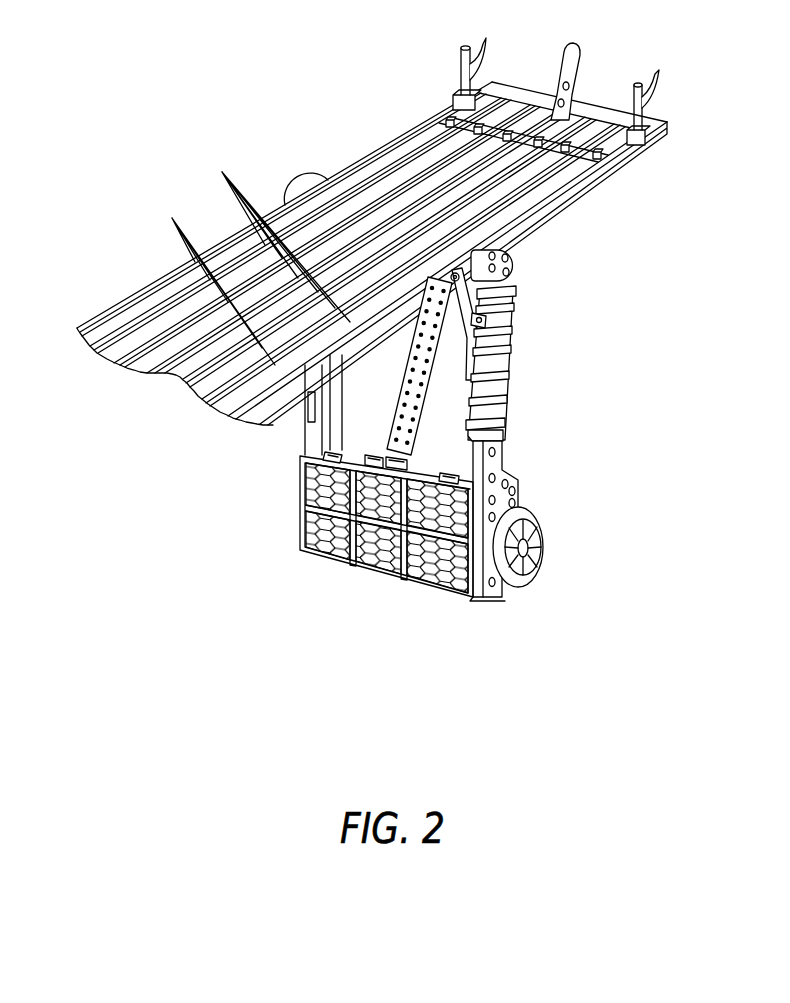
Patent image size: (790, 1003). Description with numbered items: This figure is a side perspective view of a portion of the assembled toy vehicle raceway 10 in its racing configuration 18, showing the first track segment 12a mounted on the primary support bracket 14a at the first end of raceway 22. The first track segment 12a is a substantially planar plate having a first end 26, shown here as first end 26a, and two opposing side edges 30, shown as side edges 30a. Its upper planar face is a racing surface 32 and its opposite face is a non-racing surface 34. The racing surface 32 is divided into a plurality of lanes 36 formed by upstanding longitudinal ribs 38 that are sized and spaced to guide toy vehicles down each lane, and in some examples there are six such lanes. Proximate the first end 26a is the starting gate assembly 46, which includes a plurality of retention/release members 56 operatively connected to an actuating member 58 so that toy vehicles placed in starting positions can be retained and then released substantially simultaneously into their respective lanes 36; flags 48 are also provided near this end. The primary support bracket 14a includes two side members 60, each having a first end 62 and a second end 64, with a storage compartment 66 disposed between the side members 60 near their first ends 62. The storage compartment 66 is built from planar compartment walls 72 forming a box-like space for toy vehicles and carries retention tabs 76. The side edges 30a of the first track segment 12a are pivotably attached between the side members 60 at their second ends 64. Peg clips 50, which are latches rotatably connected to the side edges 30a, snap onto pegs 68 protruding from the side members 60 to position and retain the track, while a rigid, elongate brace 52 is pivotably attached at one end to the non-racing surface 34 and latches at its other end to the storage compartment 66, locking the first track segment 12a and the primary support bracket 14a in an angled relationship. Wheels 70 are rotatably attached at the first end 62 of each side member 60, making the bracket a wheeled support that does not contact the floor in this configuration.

The toy vehicle raceway 10 is at (278, 82).
The racing configuration 18 is at (271, 106).
The first track segment 12a is at (346, 154).
The primary support bracket 14a is at (536, 474).
The first end of raceway 22 is at (626, 50).
The first end 26 is at (679, 141).
The first end 26a is at (676, 165).
The side edges 30 is at (612, 168).
The side edges 30a is at (535, 218).
The racing surface 32 is at (96, 307).
The non-racing surface 34 is at (161, 404).
The lanes 36 is at (271, 240).
The longitudinal ribs 38 is at (209, 284).
The starting gate assembly 46 is at (425, 98).
The flags 48 is at (483, 40).
The actuating member 58 is at (572, 43).
The retention/release members 56 is at (598, 160).
The second end 64 is at (529, 269).
The pegs 68 is at (486, 322).
The peg clips 50 is at (466, 306).
The brace 52 is at (416, 332).
The side members 60 is at (493, 423).
The retention tabs 76 is at (337, 452).
The wheels 70 is at (539, 530).
The storage compartment 66 is at (372, 582).
The compartment walls 72 is at (443, 560).
The first end 62 is at (504, 608).